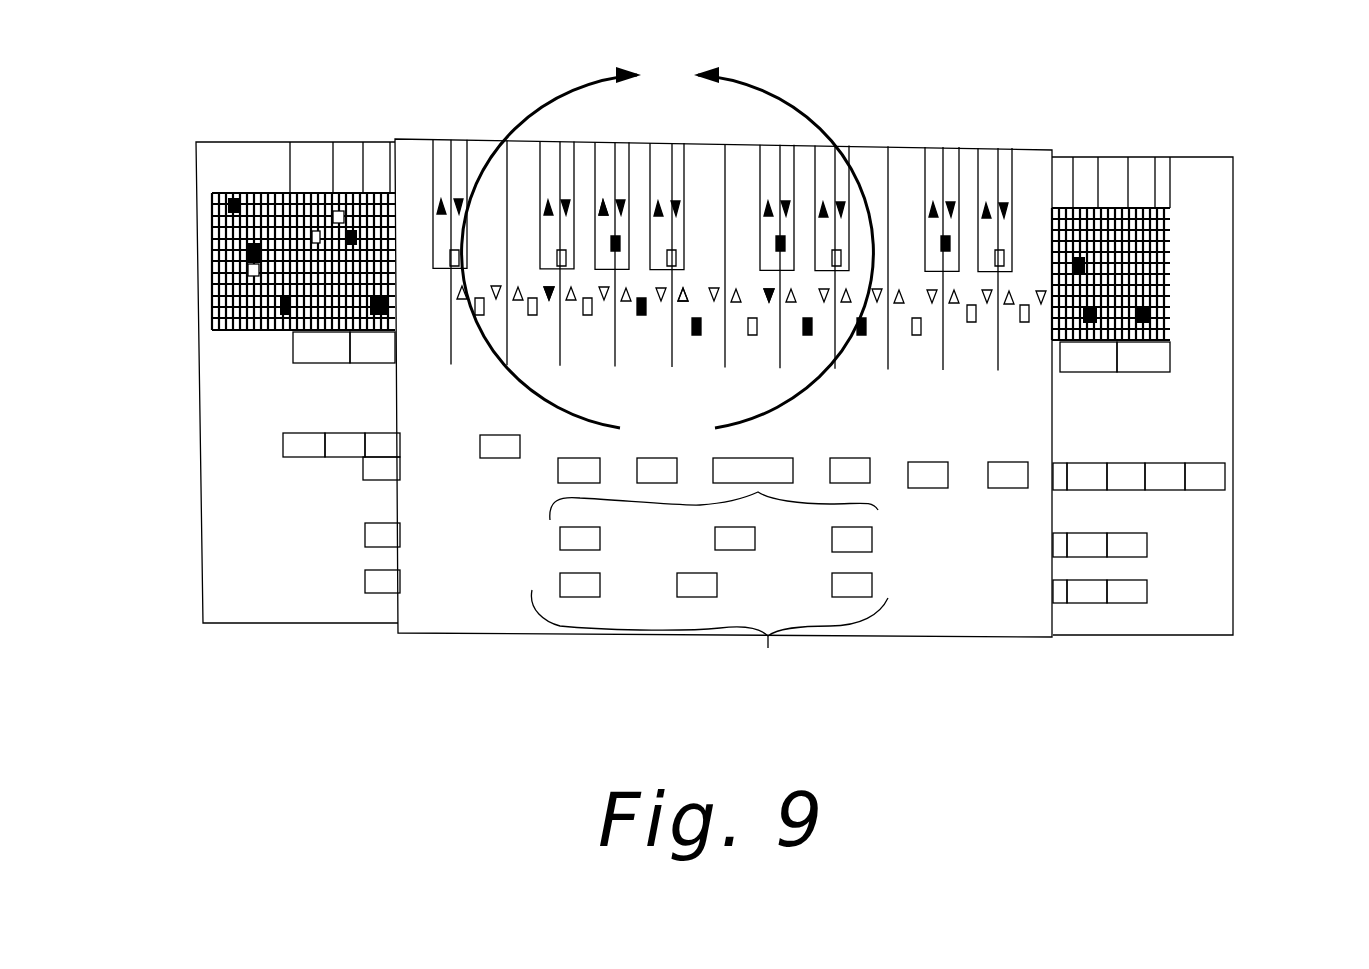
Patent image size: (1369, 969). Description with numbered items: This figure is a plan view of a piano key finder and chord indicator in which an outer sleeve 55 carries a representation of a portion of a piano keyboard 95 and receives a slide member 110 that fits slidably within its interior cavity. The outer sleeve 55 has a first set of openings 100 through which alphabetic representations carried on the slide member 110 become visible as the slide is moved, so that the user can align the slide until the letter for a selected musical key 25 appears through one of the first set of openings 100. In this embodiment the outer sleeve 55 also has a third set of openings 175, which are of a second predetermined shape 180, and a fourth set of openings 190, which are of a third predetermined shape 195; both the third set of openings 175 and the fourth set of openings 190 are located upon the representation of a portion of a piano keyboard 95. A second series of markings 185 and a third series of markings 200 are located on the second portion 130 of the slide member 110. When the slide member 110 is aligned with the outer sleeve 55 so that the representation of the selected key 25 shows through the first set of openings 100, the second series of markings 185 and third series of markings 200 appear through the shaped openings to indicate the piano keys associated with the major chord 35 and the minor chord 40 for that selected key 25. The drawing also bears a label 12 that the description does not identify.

The rotation direction indicator 12 is at (668, 241).
The selected musical key 25 is at (480, 447).
The major chord 35 is at (878, 510).
The minor chord 40 is at (709, 600).
The outer sleeve 55 is at (1010, 635).
The representation of a portion of a piano keyboard 95 is at (958, 160).
The first set of openings 100 is at (520, 460).
The slide member 110 is at (283, 623).
The second portion 130 is at (197, 250).
The third set of openings 175 is at (683, 290).
The second predetermined shape 180 is at (603, 198).
The second series of markings 185 is at (228, 197).
The fourth set of openings 190 is at (547, 287).
The third predetermined shape 195 is at (767, 290).
The third series of markings 200 is at (1170, 237).